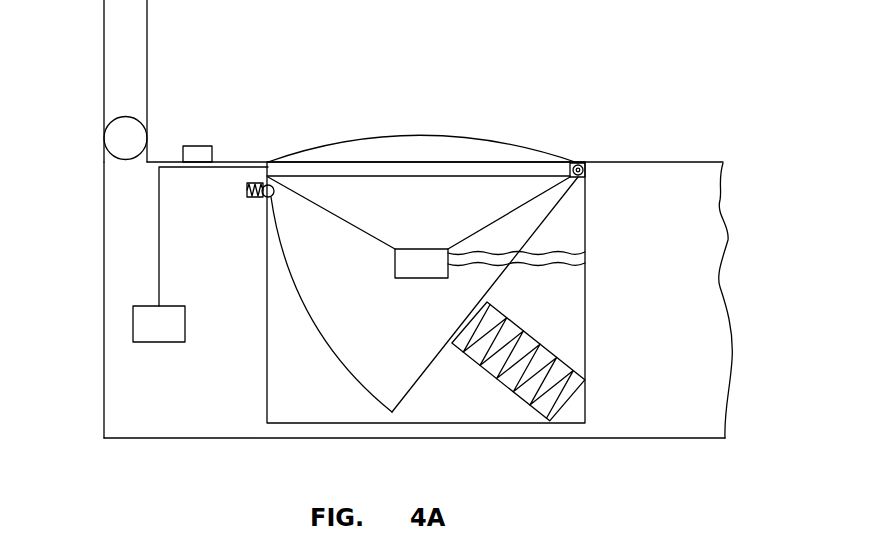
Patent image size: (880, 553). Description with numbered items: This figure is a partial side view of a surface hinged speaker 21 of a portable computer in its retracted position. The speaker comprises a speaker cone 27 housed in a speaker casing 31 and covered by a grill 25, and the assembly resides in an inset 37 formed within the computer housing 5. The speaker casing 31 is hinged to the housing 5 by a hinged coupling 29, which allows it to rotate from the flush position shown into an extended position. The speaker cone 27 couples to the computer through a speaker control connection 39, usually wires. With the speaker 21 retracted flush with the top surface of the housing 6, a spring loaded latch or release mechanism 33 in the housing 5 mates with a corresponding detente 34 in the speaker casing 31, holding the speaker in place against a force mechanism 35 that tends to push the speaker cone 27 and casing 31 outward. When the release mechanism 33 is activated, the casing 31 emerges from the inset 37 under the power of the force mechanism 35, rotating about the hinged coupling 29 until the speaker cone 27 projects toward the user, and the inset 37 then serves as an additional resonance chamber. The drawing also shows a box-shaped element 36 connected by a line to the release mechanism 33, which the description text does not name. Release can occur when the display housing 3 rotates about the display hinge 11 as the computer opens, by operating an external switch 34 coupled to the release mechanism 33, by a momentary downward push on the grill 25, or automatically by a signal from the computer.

The display housing 3 is at (104, 27).
The computer housing 5 is at (705, 195).
The top surface of the housing 6 is at (682, 162).
The display hinge 11 is at (117, 138).
The surface hinged speaker 21 is at (515, 117).
The grill 25 is at (420, 137).
The speaker cone 27 is at (374, 234).
The hinged coupling 29 is at (583, 163).
The speaker casing 31 is at (354, 341).
The release mechanism 33 is at (245, 189).
The detente 34 is at (197, 146).
The force mechanism 35 is at (496, 384).
The weight 36 is at (160, 342).
The inset 37 is at (267, 295).
The speaker control connection 39 is at (558, 266).